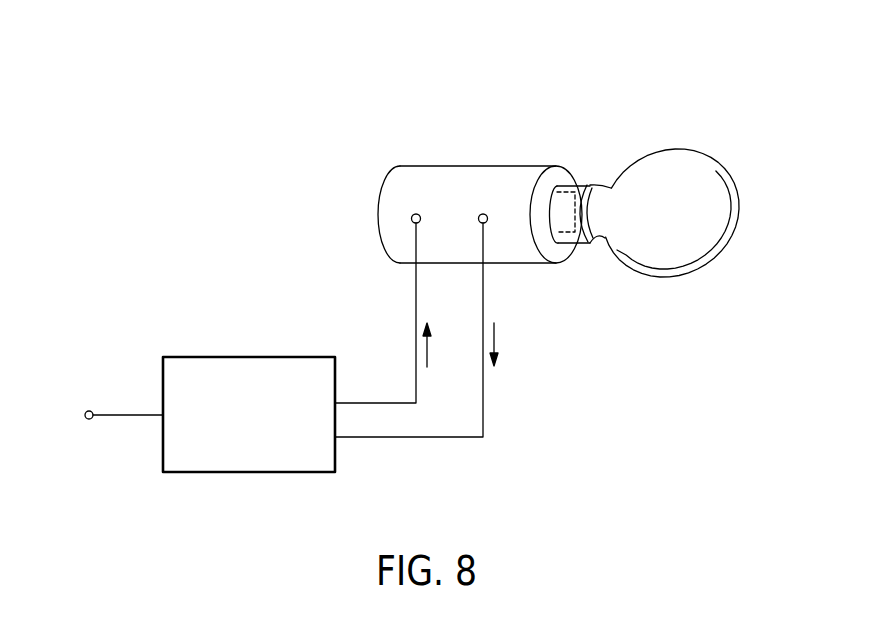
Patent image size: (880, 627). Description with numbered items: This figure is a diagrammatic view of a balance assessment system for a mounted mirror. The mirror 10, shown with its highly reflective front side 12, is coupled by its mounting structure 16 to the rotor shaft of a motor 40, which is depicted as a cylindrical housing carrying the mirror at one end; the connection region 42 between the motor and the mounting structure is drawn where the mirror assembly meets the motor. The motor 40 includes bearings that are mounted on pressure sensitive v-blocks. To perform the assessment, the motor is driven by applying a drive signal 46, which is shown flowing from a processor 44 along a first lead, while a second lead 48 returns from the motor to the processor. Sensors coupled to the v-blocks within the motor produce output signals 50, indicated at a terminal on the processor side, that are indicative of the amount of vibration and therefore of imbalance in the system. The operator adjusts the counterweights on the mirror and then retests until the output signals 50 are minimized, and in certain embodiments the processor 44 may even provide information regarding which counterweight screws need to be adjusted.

The mirror 10 is at (744, 120).
The front side 12 is at (664, 159).
The mounting structure 16 is at (565, 190).
The motor 40 is at (505, 164).
The socket 42 is at (563, 245).
The processor 44 is at (262, 427).
The drive signal 46 is at (416, 350).
The return wire 48 is at (483, 403).
The output signals 50 is at (89, 409).